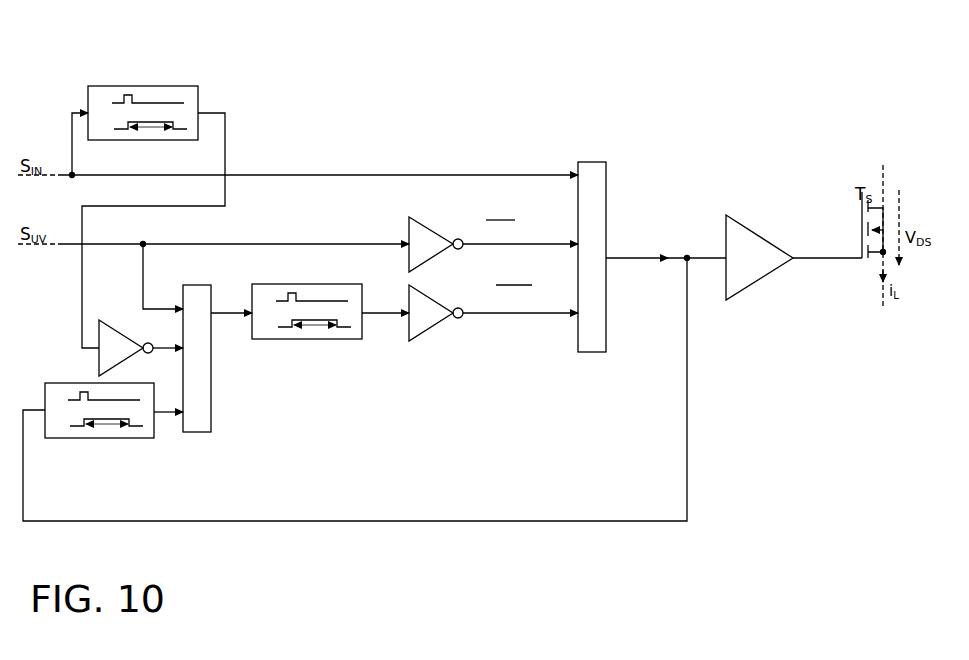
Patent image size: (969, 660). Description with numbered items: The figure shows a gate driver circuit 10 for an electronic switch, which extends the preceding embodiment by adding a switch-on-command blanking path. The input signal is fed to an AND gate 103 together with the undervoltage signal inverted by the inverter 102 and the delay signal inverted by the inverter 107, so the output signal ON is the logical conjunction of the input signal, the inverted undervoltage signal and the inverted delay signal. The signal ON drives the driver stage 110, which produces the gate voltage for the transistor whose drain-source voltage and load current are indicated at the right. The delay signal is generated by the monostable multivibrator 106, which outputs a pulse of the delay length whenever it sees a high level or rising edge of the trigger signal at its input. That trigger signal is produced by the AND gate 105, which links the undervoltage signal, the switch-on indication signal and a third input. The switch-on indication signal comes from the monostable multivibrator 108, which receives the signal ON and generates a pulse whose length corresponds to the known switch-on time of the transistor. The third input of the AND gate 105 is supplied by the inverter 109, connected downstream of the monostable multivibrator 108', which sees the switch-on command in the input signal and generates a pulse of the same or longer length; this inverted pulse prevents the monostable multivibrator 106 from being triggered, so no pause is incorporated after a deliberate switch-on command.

The gate driver circuit 10 is at (664, 78).
The inverter 102 is at (427, 218).
The AND gate 103 is at (590, 342).
The AND gate 105 is at (201, 420).
The monostable multivibrator 106 is at (300, 340).
The inverter 107 is at (428, 342).
The monostable multivibrator 108 is at (355, 389).
The monostable multivibrator 108' is at (174, 208).
The inverter 109 is at (122, 322).
The driver stage 110 is at (748, 243).